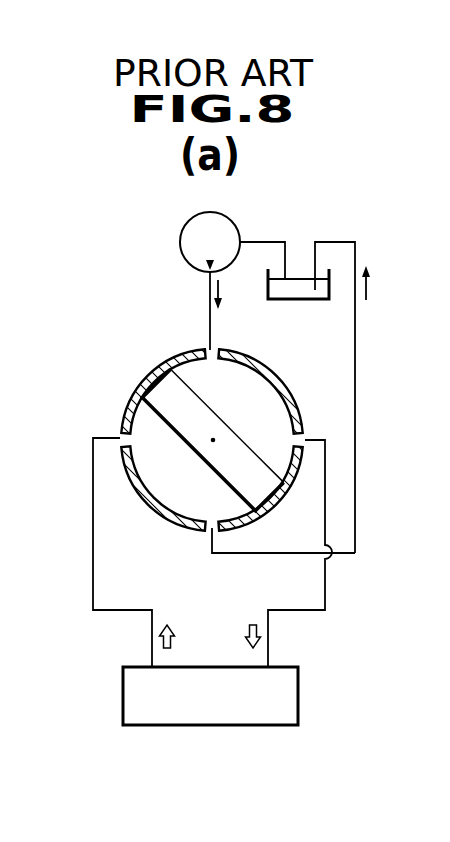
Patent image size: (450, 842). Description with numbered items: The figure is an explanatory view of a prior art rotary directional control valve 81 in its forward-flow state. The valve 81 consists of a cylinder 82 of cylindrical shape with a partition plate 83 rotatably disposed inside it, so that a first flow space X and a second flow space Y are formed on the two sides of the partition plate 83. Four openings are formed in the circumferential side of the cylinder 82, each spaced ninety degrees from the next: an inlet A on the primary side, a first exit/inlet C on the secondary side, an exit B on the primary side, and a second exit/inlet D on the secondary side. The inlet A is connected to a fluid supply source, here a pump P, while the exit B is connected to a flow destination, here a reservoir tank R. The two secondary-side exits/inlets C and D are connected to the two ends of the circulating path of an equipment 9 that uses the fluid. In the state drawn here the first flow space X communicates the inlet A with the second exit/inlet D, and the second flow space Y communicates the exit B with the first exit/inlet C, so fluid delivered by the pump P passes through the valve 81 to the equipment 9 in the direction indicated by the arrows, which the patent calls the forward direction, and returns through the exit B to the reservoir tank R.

The directional control valve 81 is at (173, 438).
The cylinder 82 is at (272, 373).
The partition plate 83 is at (193, 450).
The equipment 9 is at (233, 725).
The pump P is at (210, 242).
The reservoir tank R is at (328, 290).
The inlet A is at (203, 352).
The exit B is at (208, 532).
The first exit/inlet C is at (118, 437).
The second exit/inlet D is at (313, 430).